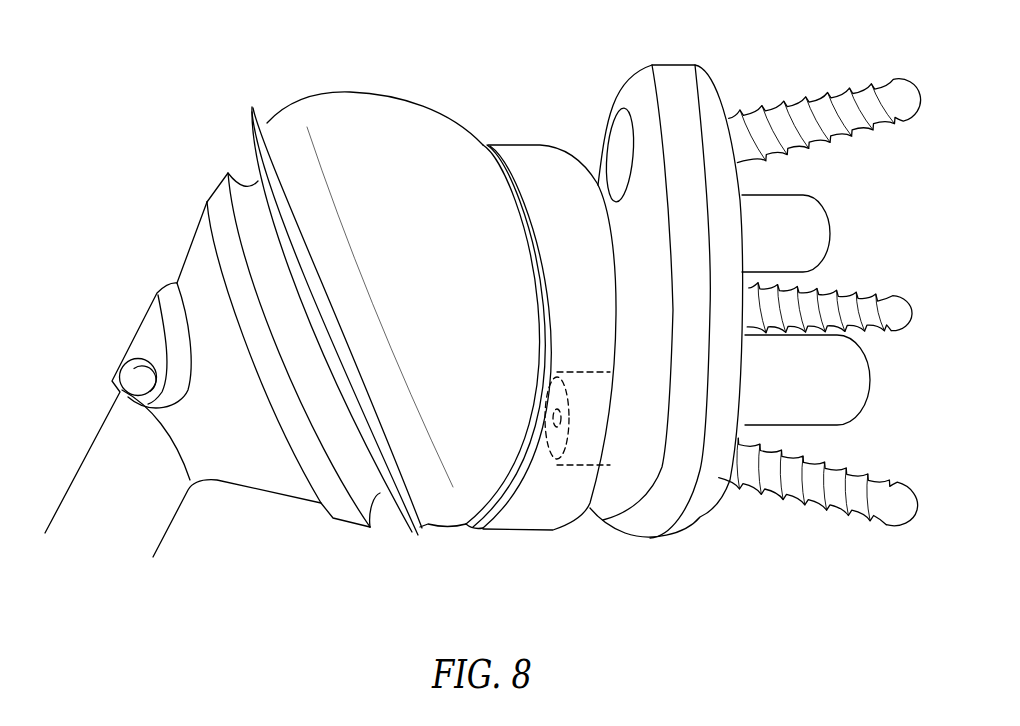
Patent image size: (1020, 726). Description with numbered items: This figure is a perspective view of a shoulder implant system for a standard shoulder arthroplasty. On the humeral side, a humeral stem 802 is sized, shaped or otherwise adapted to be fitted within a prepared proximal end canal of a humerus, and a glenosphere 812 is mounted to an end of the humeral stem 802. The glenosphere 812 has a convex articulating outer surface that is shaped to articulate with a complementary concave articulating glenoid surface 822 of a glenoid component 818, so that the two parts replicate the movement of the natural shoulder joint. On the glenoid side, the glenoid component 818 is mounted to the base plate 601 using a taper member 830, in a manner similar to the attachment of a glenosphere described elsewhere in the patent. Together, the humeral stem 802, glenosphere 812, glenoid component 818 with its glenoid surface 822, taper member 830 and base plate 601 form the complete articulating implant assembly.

The humeral stem 802 is at (169, 533).
The glenosphere 812 is at (436, 493).
The concave articulating glenoid surface 822 is at (496, 503).
The glenoid component 818 is at (560, 518).
The taper member 830 is at (553, 465).
The base plate 601 is at (697, 527).